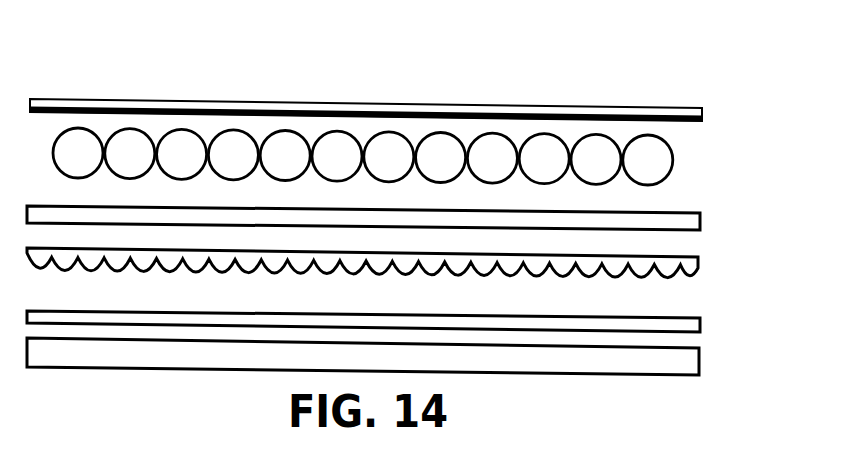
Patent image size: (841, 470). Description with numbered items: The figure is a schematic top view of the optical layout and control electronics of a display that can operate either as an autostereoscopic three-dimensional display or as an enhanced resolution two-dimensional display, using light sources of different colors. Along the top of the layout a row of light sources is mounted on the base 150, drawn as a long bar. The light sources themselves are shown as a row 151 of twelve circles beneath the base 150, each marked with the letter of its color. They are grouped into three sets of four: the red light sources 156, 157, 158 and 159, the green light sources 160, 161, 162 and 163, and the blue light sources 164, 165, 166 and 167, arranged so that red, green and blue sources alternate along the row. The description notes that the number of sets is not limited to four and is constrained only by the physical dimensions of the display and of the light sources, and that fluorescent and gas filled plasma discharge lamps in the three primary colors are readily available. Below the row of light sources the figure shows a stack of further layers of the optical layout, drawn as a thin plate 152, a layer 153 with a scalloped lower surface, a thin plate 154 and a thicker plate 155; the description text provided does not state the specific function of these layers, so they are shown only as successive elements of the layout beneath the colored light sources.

The base 150 is at (703, 114).
The pixel row 151 is at (405, 110).
The glass plate 152 is at (689, 214).
The lenticular lens layer 153 is at (698, 264).
The substrate layer 154 is at (689, 322).
The base plate 155 is at (686, 374).
The red light source 156 is at (80, 128).
The red light source 157 is at (236, 130).
The red light source 158 is at (391, 132).
The red light source 159 is at (552, 134).
The green light source 160 is at (135, 129).
The green light source 161 is at (288, 130).
The green light source 162 is at (443, 132).
The green light source 163 is at (597, 134).
The blue light source 164 is at (183, 129).
The blue light source 165 is at (340, 131).
The blue light source 166 is at (494, 133).
The blue light source 167 is at (647, 135).